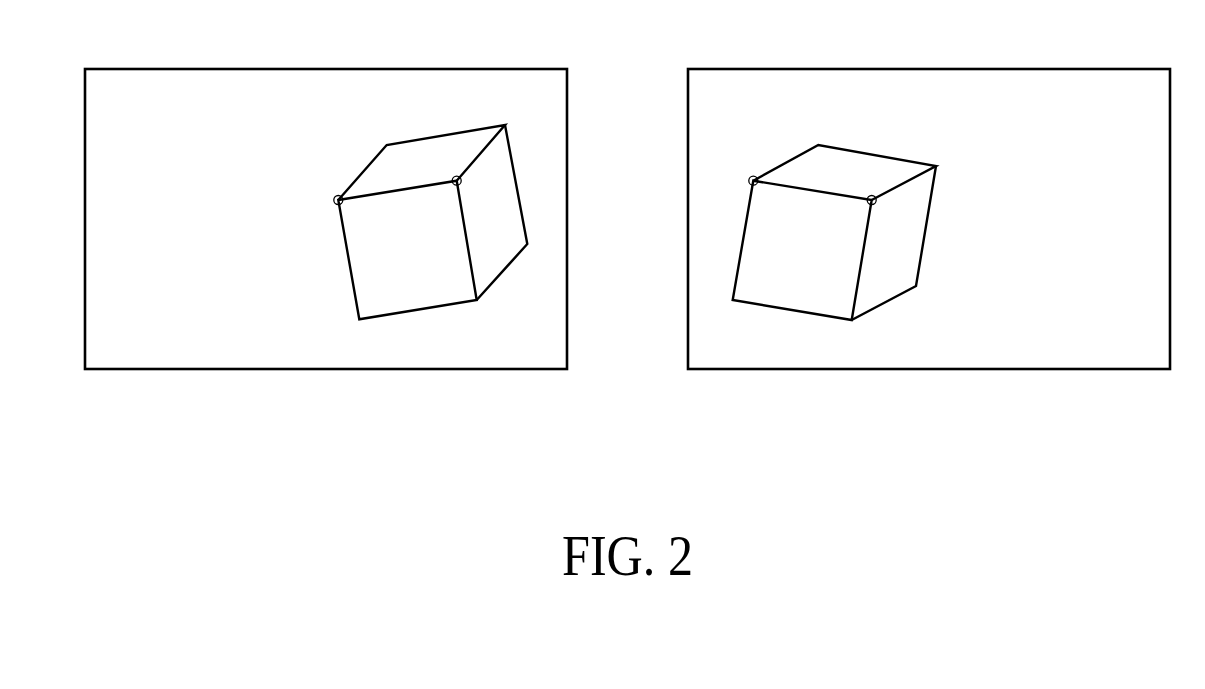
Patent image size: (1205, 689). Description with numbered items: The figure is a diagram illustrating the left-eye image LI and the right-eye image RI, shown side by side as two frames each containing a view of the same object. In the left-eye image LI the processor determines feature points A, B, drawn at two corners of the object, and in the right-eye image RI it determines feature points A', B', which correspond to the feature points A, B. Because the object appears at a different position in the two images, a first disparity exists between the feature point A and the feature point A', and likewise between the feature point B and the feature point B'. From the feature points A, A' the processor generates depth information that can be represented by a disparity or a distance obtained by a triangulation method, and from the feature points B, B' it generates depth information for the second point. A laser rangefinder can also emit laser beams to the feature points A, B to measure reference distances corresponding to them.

The left-eye image LI is at (430, 69).
The right-eye image RI is at (1032, 69).
The feature point A is at (302, 198).
The feature point B is at (531, 210).
The feature point A' is at (704, 176).
The feature point B' is at (929, 228).